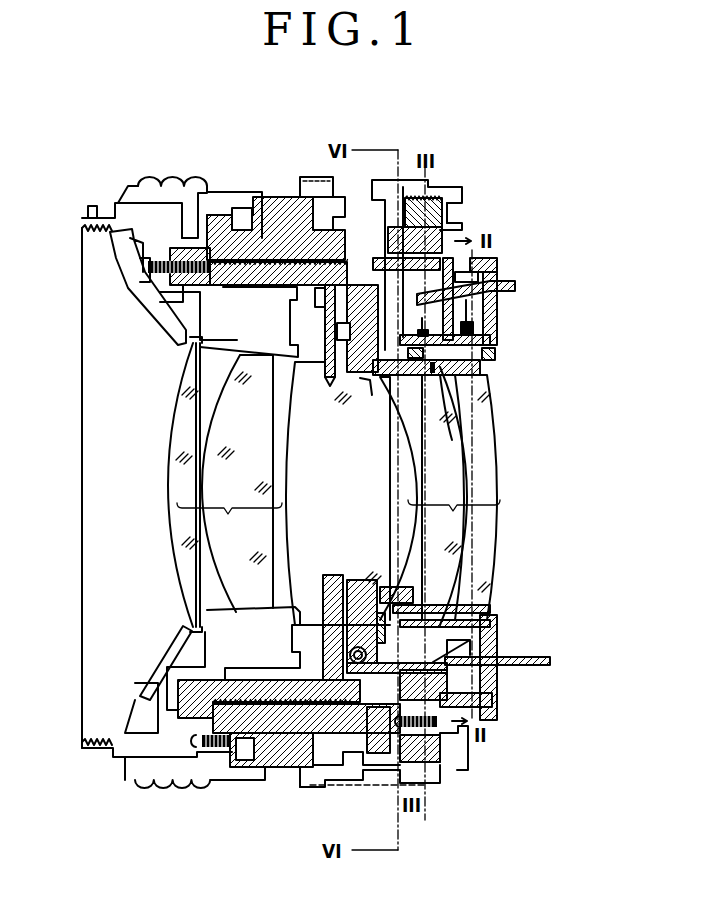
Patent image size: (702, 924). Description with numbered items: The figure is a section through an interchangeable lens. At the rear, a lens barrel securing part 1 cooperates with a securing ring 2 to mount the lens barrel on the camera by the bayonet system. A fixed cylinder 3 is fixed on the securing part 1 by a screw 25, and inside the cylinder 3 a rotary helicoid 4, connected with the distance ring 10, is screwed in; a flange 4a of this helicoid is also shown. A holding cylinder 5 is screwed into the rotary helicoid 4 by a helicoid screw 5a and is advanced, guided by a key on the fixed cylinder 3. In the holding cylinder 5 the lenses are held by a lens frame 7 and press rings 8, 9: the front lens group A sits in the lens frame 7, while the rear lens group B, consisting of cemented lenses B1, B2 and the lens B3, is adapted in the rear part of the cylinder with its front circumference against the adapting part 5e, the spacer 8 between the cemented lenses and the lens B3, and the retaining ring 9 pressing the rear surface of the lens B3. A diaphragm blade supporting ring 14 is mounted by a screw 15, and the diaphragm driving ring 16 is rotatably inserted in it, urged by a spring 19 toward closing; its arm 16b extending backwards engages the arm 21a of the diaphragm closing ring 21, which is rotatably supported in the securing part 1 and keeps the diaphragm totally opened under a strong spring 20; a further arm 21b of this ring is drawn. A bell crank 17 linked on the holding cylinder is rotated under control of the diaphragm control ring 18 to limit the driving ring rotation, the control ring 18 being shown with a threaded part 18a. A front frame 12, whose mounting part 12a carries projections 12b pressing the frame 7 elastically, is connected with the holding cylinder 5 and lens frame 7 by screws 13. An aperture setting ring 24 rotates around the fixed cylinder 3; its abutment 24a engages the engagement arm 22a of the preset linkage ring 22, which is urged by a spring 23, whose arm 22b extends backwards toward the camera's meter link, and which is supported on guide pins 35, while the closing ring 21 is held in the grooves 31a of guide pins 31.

The lens barrel securing part 1 is at (443, 773).
The securing ring 2 is at (453, 768).
The fixed cylinder 3 is at (300, 205).
The rotary helicoid 4 is at (282, 218).
The helicoid ring flange 4a is at (262, 762).
The holding cylinder 5 is at (265, 276).
The helicoid screw 5a is at (238, 272).
The adapting part 5e is at (372, 392).
The lens frame 7 is at (175, 294).
The press ring (spacer) 8 is at (462, 378).
The press ring (retaining ring) 9 is at (483, 362).
The distance ring 10 is at (212, 192).
The front frame 12 is at (118, 210).
The mounting part 12a is at (142, 686).
The projections 12b is at (160, 682).
The screw 13 is at (140, 270).
The diaphragm blade supporting ring 14 is at (330, 302).
The screw 15 is at (312, 292).
The diaphragm driving ring 16 is at (322, 636).
The arm 16b is at (375, 755).
The bell crank 17 is at (330, 355).
The diaphragm control ring 18 is at (375, 605).
The threaded ring 18a is at (442, 262).
The spring 19 is at (348, 662).
The strong spring 20 is at (497, 327).
The diaphragm closing ring 21 is at (497, 310).
The arm 21a is at (475, 676).
The frame projection 21b is at (552, 661).
The preset linkage ring 22 is at (466, 232).
The engagement arm 22a is at (455, 228).
The arm 22b is at (516, 287).
The spring 23 is at (492, 344).
The aperture setting ring 24 is at (320, 176).
The abutment 24a is at (384, 245).
The screw 25 is at (460, 738).
The guide pins 31 is at (497, 272).
The grooves 31a is at (492, 262).
The guide pins 35 is at (482, 704).
The front lens group A is at (225, 484).
The rear lens group B is at (454, 516).
The rear lens group lens B1 is at (400, 440).
The rear lens group lens B2 is at (440, 552).
The rear lens B3 is at (492, 442).